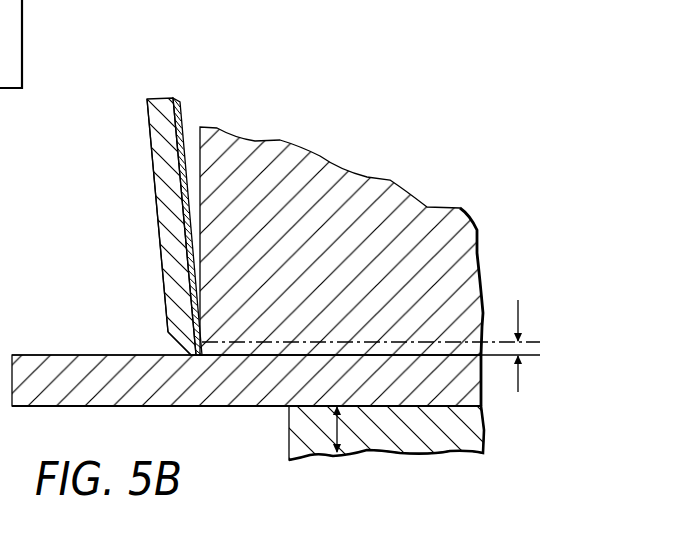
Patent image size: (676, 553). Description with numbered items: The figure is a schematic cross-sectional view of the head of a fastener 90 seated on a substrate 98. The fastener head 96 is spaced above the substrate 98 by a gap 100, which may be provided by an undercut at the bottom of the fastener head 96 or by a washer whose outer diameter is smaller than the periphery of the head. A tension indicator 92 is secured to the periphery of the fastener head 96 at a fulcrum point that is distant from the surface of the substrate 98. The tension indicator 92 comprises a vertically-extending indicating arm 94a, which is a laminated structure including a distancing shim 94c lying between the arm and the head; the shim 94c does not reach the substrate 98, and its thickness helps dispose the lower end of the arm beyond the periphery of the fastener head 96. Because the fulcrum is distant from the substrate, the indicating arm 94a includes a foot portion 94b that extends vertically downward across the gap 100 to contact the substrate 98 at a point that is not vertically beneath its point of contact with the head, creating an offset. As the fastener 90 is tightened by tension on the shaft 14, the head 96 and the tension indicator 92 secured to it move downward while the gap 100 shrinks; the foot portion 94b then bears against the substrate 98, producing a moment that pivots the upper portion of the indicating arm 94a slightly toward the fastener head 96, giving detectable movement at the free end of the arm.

The fastener 90 is at (243, 82).
The tension indicator 92 is at (136, 128).
The indicating arm 94a is at (153, 190).
The foot portion 94b is at (190, 354).
The distancing shim 94c is at (256, 121).
The fastener head 96 is at (333, 203).
The substrate 98 is at (70, 355).
The gap 100 is at (518, 327).
The shaft 14 is at (295, 440).